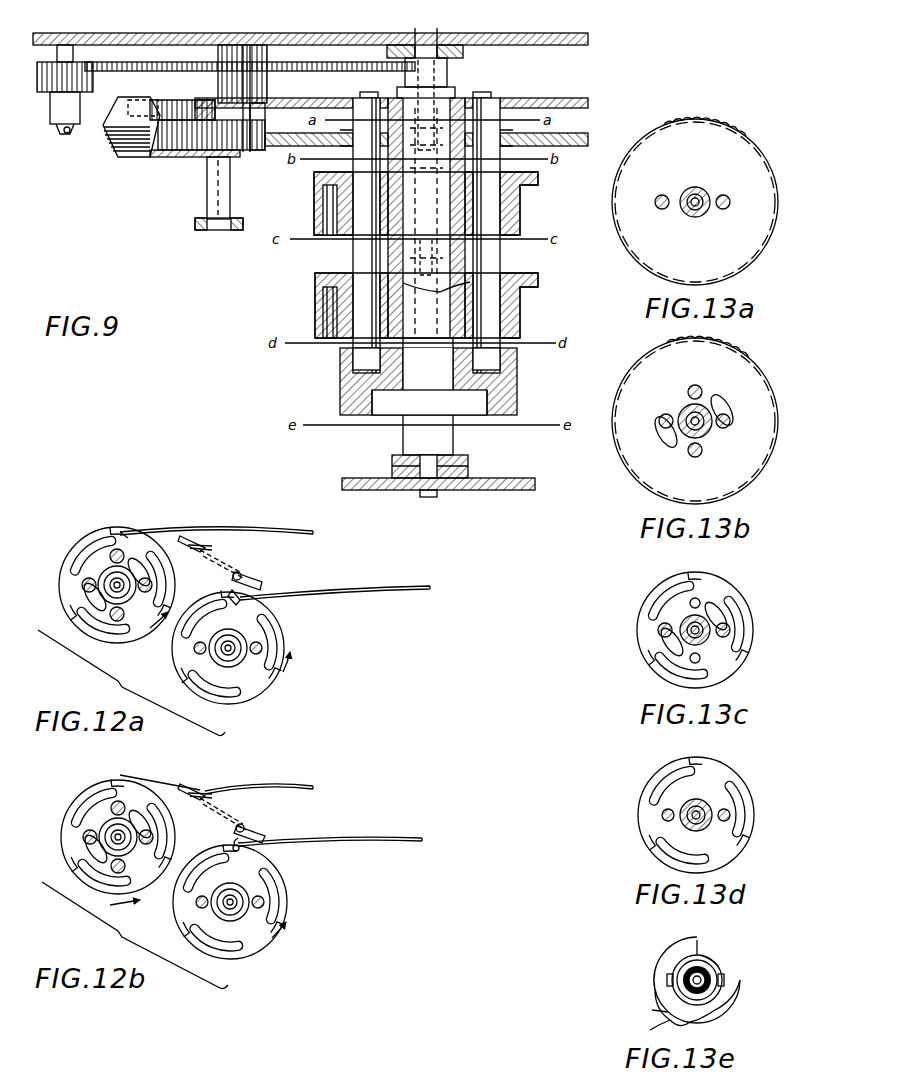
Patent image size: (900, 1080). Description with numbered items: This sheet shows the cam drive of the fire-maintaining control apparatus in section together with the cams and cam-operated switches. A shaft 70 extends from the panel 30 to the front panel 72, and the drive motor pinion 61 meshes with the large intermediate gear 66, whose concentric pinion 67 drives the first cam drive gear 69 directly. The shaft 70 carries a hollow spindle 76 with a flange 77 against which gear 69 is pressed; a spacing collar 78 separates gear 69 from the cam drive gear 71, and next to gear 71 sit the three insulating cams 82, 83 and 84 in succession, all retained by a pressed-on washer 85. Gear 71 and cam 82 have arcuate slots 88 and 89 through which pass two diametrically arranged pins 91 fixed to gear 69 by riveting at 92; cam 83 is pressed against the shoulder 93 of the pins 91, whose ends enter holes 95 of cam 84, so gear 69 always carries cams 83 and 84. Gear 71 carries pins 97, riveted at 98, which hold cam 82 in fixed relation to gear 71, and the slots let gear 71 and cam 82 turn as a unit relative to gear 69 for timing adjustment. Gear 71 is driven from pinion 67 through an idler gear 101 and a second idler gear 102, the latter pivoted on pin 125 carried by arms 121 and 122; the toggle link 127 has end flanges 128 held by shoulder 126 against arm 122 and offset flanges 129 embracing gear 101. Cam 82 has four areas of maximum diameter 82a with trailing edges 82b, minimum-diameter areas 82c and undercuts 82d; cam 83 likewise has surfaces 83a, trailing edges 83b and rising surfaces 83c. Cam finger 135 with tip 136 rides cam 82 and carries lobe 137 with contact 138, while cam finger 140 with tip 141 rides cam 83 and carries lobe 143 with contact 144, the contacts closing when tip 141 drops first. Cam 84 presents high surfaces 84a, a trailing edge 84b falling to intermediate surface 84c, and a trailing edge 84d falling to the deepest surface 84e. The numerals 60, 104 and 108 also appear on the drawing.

In FIG. 9, the panel 30 is at (583, 33).
In FIG. 9, the shaft 70 is at (440, 18).
In FIG. 13a, the shaft 70 is at (697, 198).
In FIG. 13b, the shaft 70 is at (702, 428).
In FIG. 13c, the shaft 70 is at (702, 636).
In FIG. 13d, the shaft 70 is at (694, 822).
In FIG. 13e, the shaft 70 is at (705, 988).
In FIG. 9, the hollow spindle 76 is at (447, 66).
In FIG. 13a, the hollow spindle 76 is at (690, 190).
In FIG. 9, the flange 77 is at (456, 93).
In FIG. 9, the pressed and riveted ends of pins 97 98 is at (425, 130).
In FIG. 9, the first cam drive gear 69 is at (590, 99).
In FIG. 13a, the first cam drive gear 69 is at (736, 128).
In FIG. 9, the cam drive gear 71 is at (590, 134).
In FIG. 13b, the cam drive gear 71 is at (740, 350).
In FIG. 9, the riveted or pressed attachment 92 is at (367, 92).
In FIG. 9, the pins 91 is at (362, 257).
In FIG. 13a, the pins 91 is at (661, 210).
In FIG. 13b, the pins 91 is at (666, 414).
In FIG. 13c, the pins 91 is at (662, 626).
In FIG. 13d, the pins 91 is at (665, 810).
In FIG. 13e, the pins 91 is at (666, 978).
In FIG. 9, the spacing collar 78 is at (393, 100).
In FIG. 9, the arcuate slots 88 is at (350, 146).
In FIG. 13b, the arcuate slots 88 is at (725, 398).
In FIG. 9, the cam 82 is at (538, 205).
In FIG. 13c, the cam 82 is at (750, 610).
In FIG. 12a, the cam 82 is at (62, 617).
In FIG. 12b, the cam 82 is at (86, 792).
In FIG. 9, the arcuate slots 89 is at (330, 205).
In FIG. 13c, the arcuate slots 89 is at (718, 604).
In FIG. 9, the cam 83 is at (538, 307).
In FIG. 13d, the cam 83 is at (752, 785).
In FIG. 12a, the cam 83 is at (270, 692).
In FIG. 12b, the cam 83 is at (293, 912).
In FIG. 9, the pins 97 is at (428, 253).
In FIG. 13b, the pins 97 is at (695, 385).
In FIG. 13c, the pins 97 is at (697, 598).
In FIG. 9, the shoulder 93 is at (403, 292).
In FIG. 9, the cam 84 is at (518, 382).
In FIG. 13e, the cam 84 is at (745, 978).
In FIG. 9, the holes 95 is at (345, 374).
In FIG. 9, the pressed-on washer 85 is at (473, 398).
In FIG. 9, the bearing disc 108 is at (468, 460).
In FIG. 9, the bearing 104 is at (470, 470).
In FIG. 9, the front panel 72 is at (500, 480).
In FIG. 9, the large intermediate gear 66 is at (126, 62).
In FIG. 9, the pinion 61 is at (42, 90).
In FIG. 9, the motor 60 is at (60, 130).
In FIG. 9, the concentric pinion 67 is at (286, 78).
In FIG. 9, the downwardly extending arm 122 is at (222, 100).
In FIG. 9, the idler gear 101 is at (192, 100).
In FIG. 9, the toggle link 127 is at (112, 130).
In FIG. 9, the downward flanges 129 is at (140, 98).
In FIG. 9, the shoulder 126 is at (208, 160).
In FIG. 9, the end flanges 128 is at (178, 158).
In FIG. 9, the second idler gear 102 is at (252, 150).
In FIG. 9, the pivot pin 125 is at (210, 208).
In FIG. 9, the downwardly extending arm 121 is at (196, 232).
In FIG. 12a, the areas of maximum diameter 82a is at (104, 530).
In FIG. 12a, the trailing edges 82b is at (130, 530).
In FIG. 12a, the areas of minimum diameter 82c is at (74, 556).
In FIG. 12a, the undercut 82d is at (97, 538).
In FIG. 12a, the most elevated cam surfaces 83a is at (283, 630).
In FIG. 12a, the trailing edge 83b is at (240, 596).
In FIG. 12a, the cam surface 83c is at (240, 600).
In FIG. 12a, the cam finger 135 is at (245, 530).
In FIG. 12b, the cam finger 135 is at (248, 788).
In FIG. 12a, the tip 136 is at (128, 530).
In FIG. 12a, the lobe 137 is at (205, 545).
In FIG. 12b, the lobe 137 is at (203, 794).
In FIG. 12a, the contact 138 is at (188, 536).
In FIG. 12b, the contact 138 is at (188, 784).
In FIG. 12a, the cam finger 140 is at (345, 592).
In FIG. 12b, the cam finger 140 is at (378, 832).
In FIG. 12a, the tip 141 is at (230, 592).
In FIG. 12a, the lobe 143 is at (262, 580).
In FIG. 12b, the lobe 143 is at (266, 836).
In FIG. 12a, the contact 144 is at (240, 572).
In FIG. 12b, the contact 144 is at (240, 824).
In FIG. 13e, the surfaces of maximum elevation 84a is at (672, 946).
In FIG. 13e, the trailing edge 84b is at (656, 1029).
In FIG. 13e, the surface of intermediate depth 84c is at (665, 1013).
In FIG. 13e, the trailing edge 84d is at (697, 942).
In FIG. 13e, the surface of maximum depth 84e is at (704, 956).